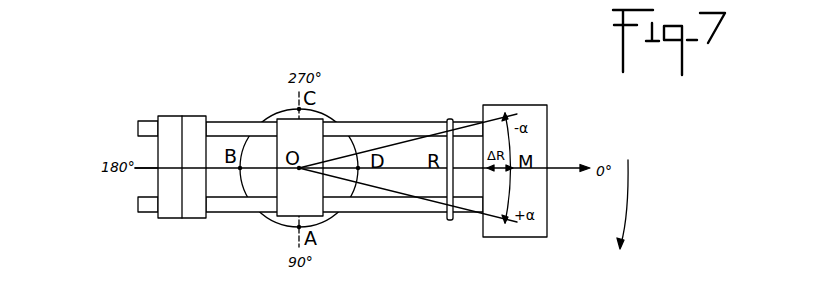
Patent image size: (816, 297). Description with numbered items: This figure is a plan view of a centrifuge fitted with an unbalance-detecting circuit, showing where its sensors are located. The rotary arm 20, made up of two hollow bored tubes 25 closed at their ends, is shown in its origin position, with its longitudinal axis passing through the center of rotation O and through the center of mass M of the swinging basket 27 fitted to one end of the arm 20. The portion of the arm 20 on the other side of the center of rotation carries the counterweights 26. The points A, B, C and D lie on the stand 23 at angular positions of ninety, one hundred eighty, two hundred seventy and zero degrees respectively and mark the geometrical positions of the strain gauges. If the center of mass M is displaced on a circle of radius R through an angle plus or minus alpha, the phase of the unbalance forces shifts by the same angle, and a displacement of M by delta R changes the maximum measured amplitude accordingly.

The rotary arm 20 is at (437, 108).
The stand 23 is at (325, 111).
The bored tubes 25 is at (400, 130).
The counterweights 26 is at (170, 120).
The swinging basket 27 is at (540, 107).